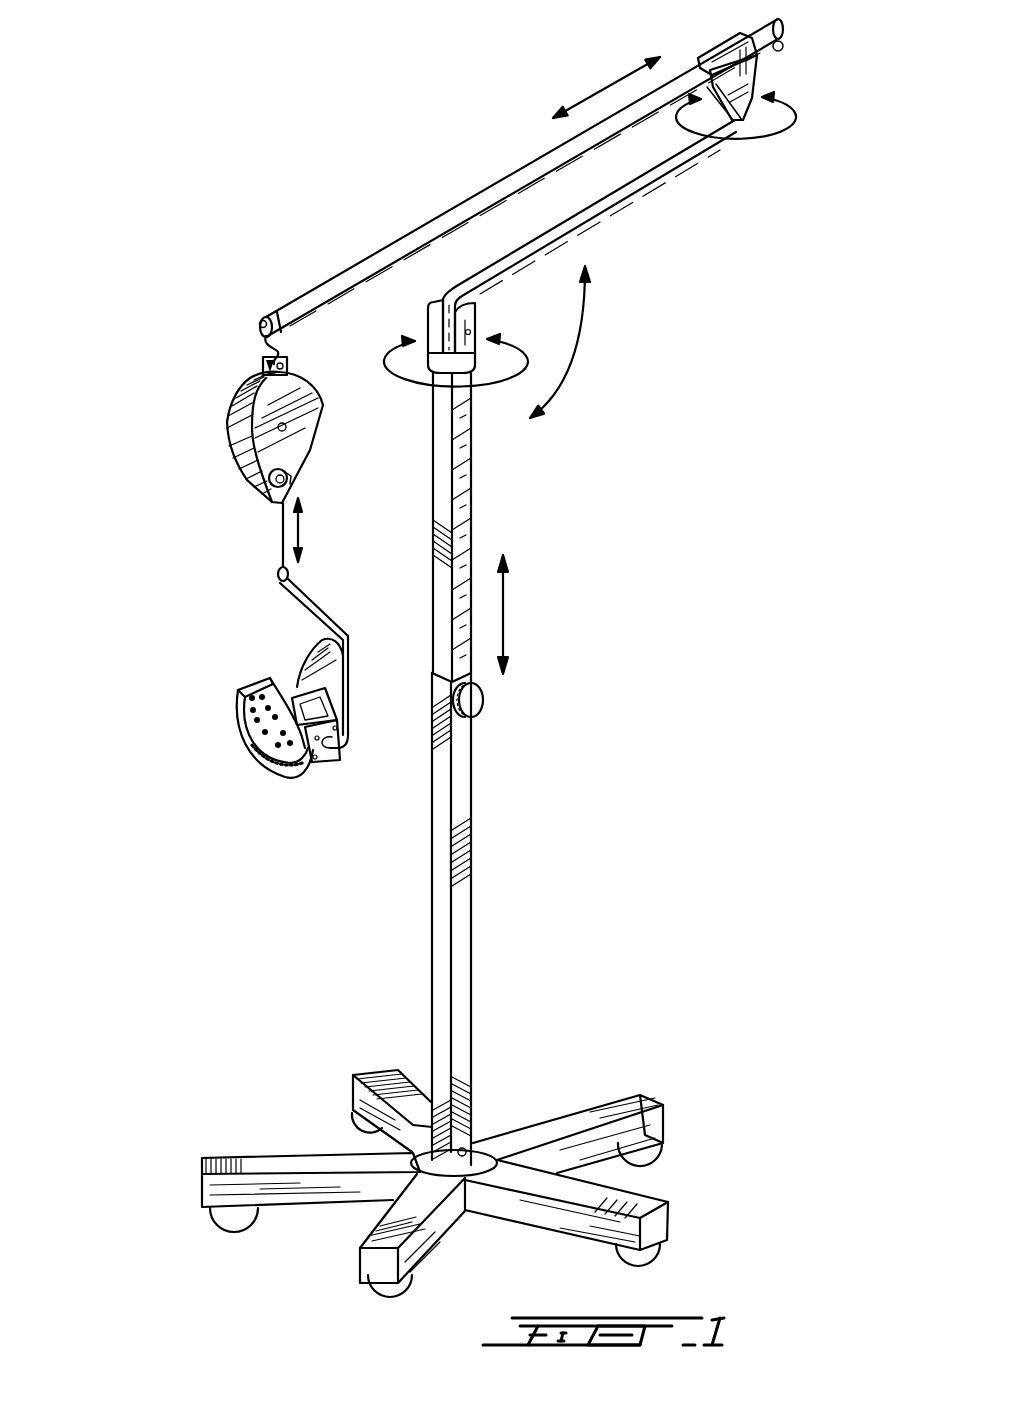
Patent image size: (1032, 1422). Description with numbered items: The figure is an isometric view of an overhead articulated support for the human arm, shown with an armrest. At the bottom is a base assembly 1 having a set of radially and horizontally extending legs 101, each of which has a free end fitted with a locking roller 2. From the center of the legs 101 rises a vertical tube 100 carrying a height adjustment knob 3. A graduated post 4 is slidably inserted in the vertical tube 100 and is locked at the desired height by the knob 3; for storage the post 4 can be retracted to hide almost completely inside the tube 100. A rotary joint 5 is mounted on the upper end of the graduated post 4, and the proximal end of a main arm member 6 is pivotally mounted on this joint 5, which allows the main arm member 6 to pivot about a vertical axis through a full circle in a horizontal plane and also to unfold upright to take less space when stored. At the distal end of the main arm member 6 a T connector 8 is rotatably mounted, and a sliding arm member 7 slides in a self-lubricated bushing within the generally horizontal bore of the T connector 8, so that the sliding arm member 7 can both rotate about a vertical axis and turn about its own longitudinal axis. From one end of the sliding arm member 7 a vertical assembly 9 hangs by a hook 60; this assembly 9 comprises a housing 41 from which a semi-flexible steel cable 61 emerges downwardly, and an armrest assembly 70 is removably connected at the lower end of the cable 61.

The base assembly 1 is at (462, 989).
The locking roller 2 is at (642, 1158).
The height adjustment knob 3 is at (474, 701).
The graduated post 4 is at (463, 519).
The rotary joint 5 is at (431, 310).
The main arm member 6 is at (623, 192).
The sliding arm member 7 is at (377, 260).
The T connector 8 is at (722, 60).
The vertical assembly 9 is at (310, 393).
The housing 41 is at (296, 452).
The hook 60 is at (283, 352).
The semi-flexible cable 61 is at (285, 545).
The armrest assembly 70 is at (330, 765).
The vertical tube 100 is at (469, 835).
The legs 101 is at (260, 1163).